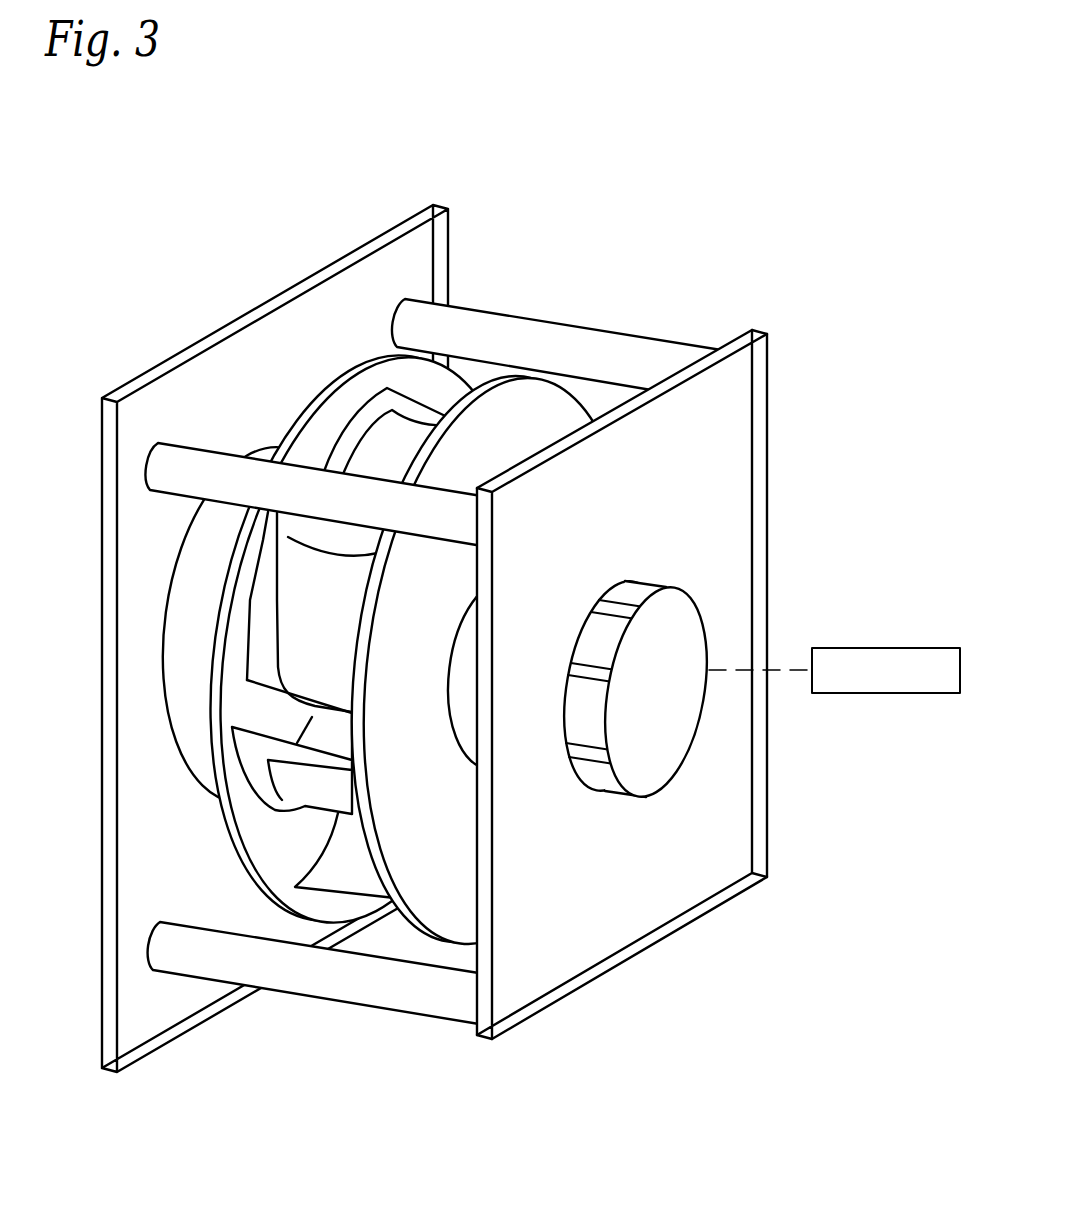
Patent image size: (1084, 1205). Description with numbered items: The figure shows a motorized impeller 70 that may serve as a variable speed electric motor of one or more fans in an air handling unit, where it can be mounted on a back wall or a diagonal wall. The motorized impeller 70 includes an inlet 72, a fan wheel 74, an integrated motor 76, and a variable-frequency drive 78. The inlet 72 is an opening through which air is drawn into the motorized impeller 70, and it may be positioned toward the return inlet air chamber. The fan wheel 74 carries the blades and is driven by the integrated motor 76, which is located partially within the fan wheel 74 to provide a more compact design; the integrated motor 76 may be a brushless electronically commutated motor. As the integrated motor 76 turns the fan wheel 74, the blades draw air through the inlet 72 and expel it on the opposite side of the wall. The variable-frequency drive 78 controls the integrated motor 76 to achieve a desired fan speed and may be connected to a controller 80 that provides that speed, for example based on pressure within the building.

The motorized impeller 70 is at (451, 627).
The inlet 72 is at (176, 558).
The fan wheel 74 is at (250, 870).
The integrated motor 76 is at (468, 758).
The variable-frequency drive 78 is at (690, 598).
The controller 80 is at (850, 647).